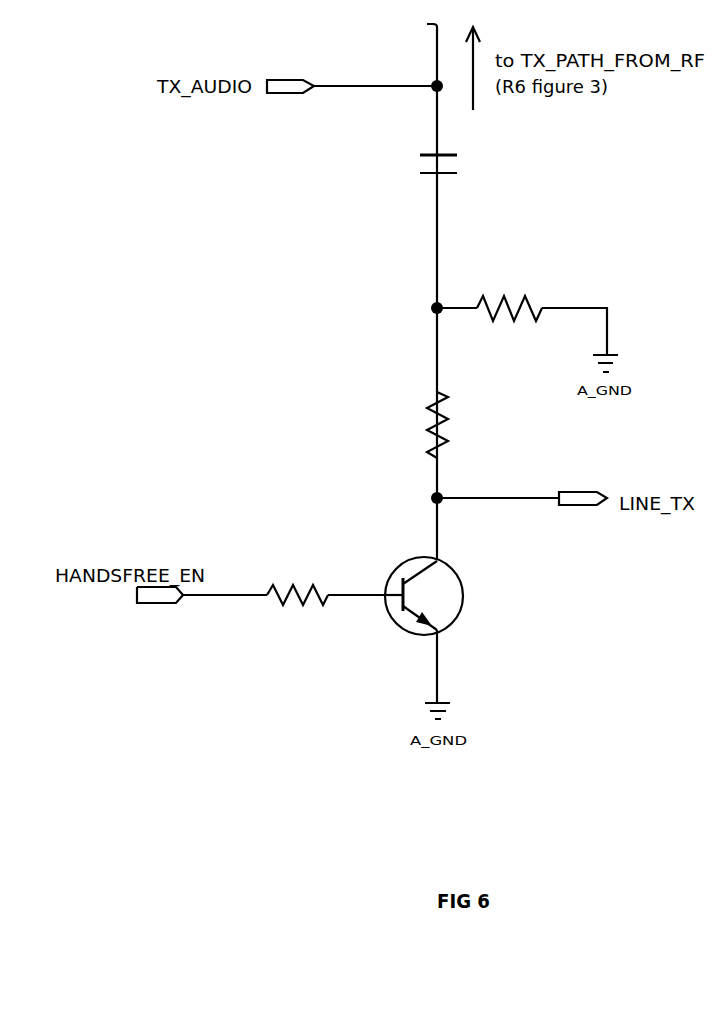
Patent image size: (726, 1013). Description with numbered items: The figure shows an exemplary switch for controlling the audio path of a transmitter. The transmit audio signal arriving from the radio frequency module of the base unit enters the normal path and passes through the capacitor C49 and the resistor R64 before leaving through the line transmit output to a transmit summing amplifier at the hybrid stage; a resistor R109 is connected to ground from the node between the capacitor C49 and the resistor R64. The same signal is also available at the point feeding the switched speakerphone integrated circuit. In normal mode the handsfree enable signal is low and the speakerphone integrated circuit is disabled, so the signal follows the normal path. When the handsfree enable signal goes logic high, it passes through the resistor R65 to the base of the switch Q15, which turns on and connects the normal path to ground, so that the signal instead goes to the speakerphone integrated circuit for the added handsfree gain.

The capacitor C49 is at (465, 169).
The resistor R109 is at (509, 280).
The resistor R64 is at (466, 425).
The resistor R65 is at (297, 626).
The switch Q15 is at (452, 596).